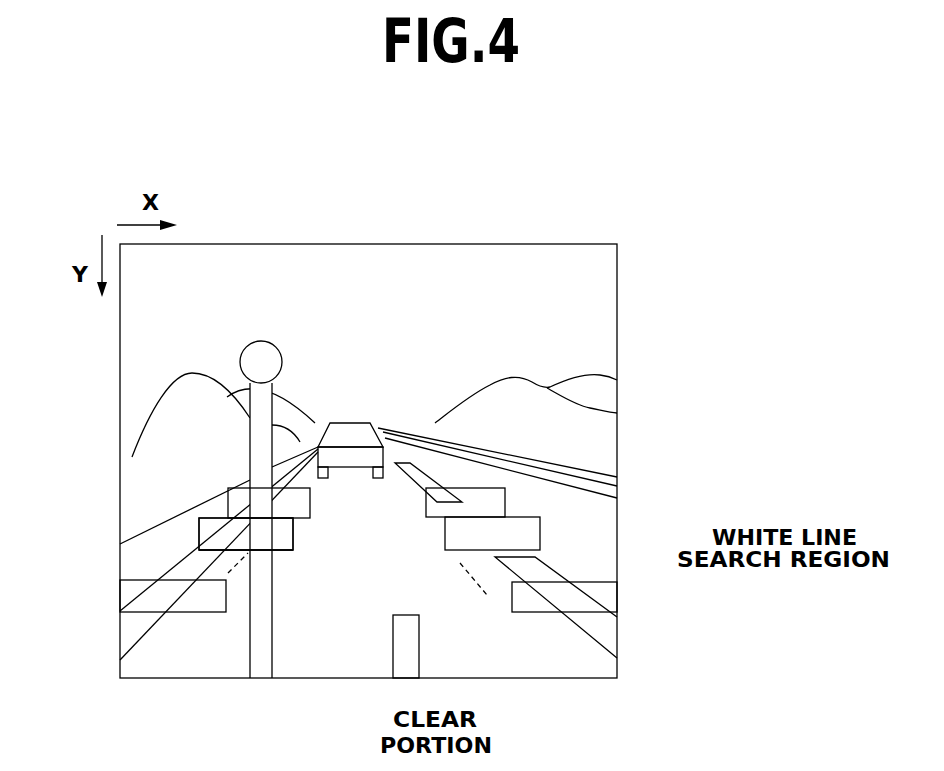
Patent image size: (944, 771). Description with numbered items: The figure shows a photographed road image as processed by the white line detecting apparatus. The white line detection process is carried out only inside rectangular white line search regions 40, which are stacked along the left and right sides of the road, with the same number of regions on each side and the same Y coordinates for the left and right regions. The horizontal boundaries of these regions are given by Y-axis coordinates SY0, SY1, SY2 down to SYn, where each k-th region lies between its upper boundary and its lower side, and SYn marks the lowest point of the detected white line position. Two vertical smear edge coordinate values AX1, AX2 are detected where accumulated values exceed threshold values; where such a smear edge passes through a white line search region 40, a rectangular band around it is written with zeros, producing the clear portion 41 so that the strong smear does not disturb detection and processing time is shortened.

The white line search region 40 is at (540, 533).
The clear portion 41 is at (272, 533).
The Y-axis coordinate of the top white line search region boundary SY0 is at (228, 488).
The Y-axis coordinate of the lower side of the first white line search region SY1 is at (199, 518).
The Y-axis coordinate of the lower side of the second white line search region SY2 is at (199, 549).
The Y-axis coordinate of the lowest white line search region SYn is at (120, 612).
The smear edge coordinate value AX1 is at (250, 696).
The smear edge coordinate value AX2 is at (270, 696).